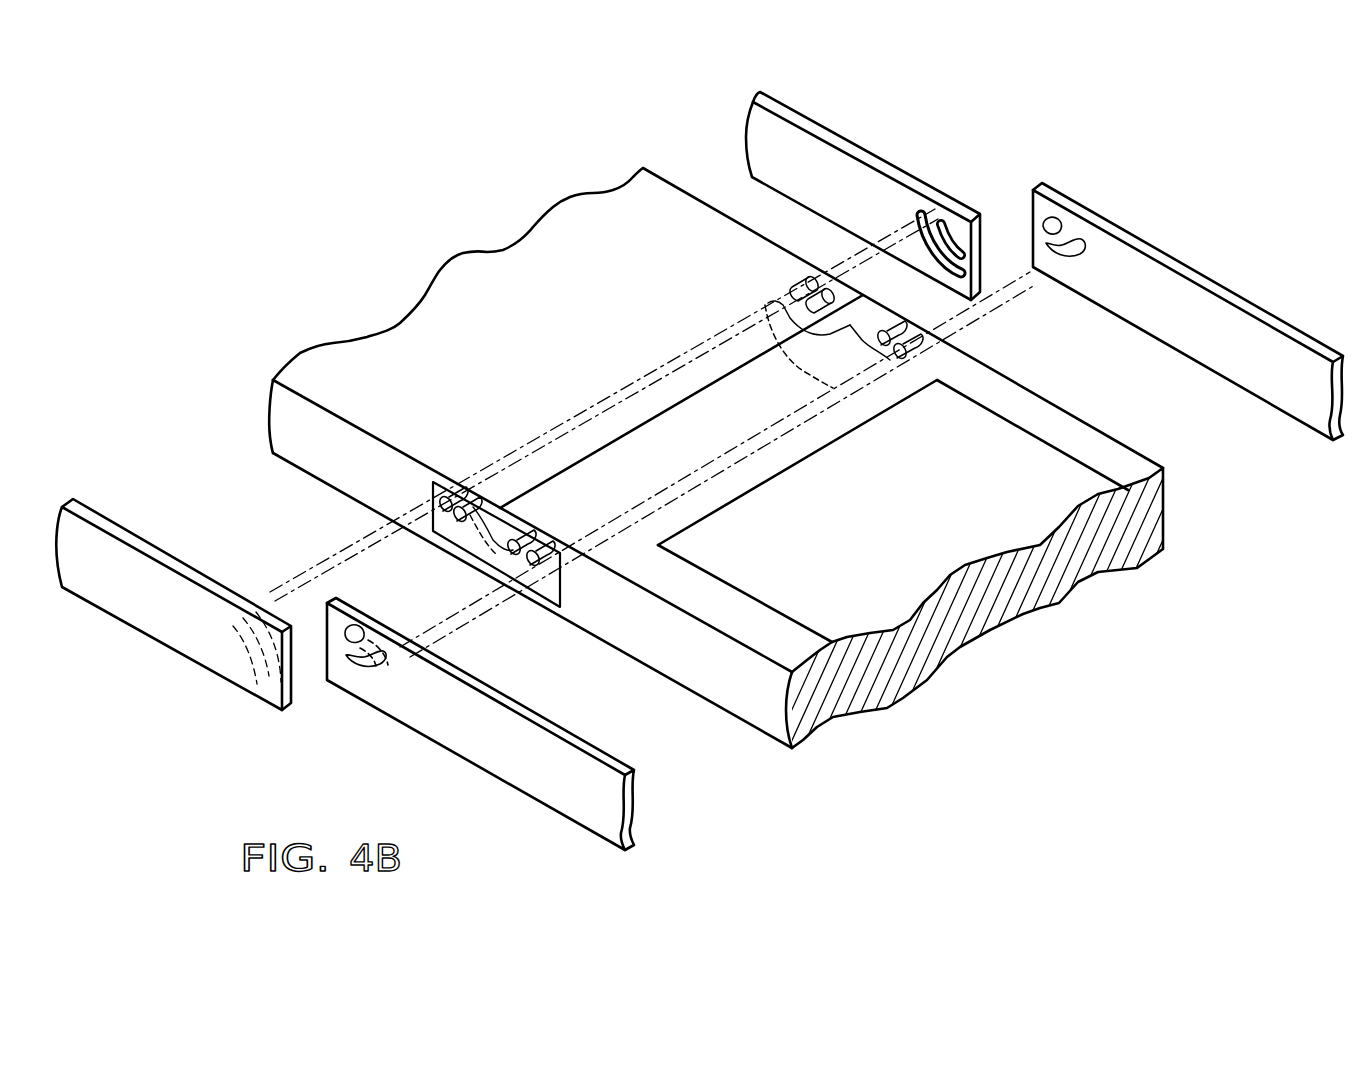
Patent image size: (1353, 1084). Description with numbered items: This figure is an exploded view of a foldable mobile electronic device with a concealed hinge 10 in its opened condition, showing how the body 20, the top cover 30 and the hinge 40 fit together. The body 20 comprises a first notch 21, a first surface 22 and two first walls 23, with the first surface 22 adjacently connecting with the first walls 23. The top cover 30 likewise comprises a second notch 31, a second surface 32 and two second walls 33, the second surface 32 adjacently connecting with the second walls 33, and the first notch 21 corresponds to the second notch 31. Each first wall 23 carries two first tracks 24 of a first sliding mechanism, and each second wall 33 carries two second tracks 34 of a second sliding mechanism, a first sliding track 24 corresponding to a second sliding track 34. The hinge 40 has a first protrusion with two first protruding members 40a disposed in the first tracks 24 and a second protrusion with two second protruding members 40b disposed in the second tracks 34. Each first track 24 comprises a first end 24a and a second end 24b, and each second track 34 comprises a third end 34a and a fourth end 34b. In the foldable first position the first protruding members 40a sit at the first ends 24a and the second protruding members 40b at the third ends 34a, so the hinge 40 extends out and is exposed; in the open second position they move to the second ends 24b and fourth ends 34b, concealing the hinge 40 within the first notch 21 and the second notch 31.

The foldable mobile electronic device with a concealed hinge 10 is at (101, 101).
The body 20 is at (440, 113).
The first notch 21 is at (437, 482).
The first surface 22 is at (447, 312).
The first walls 23 is at (178, 592).
The first track 24 is at (957, 225).
The first end 24a is at (922, 212).
The second end 24b is at (962, 253).
The top cover 30 is at (1260, 640).
The second notch 31 is at (640, 634).
The second surface 32 is at (947, 537).
The second walls 33 is at (1218, 360).
The second track 34 is at (1047, 220).
The third end 34a is at (1033, 250).
The fourth end 34b is at (1088, 240).
The hinge 40 is at (472, 542).
The first protruding members 40a is at (447, 506).
The second protruding members 40b is at (513, 548).